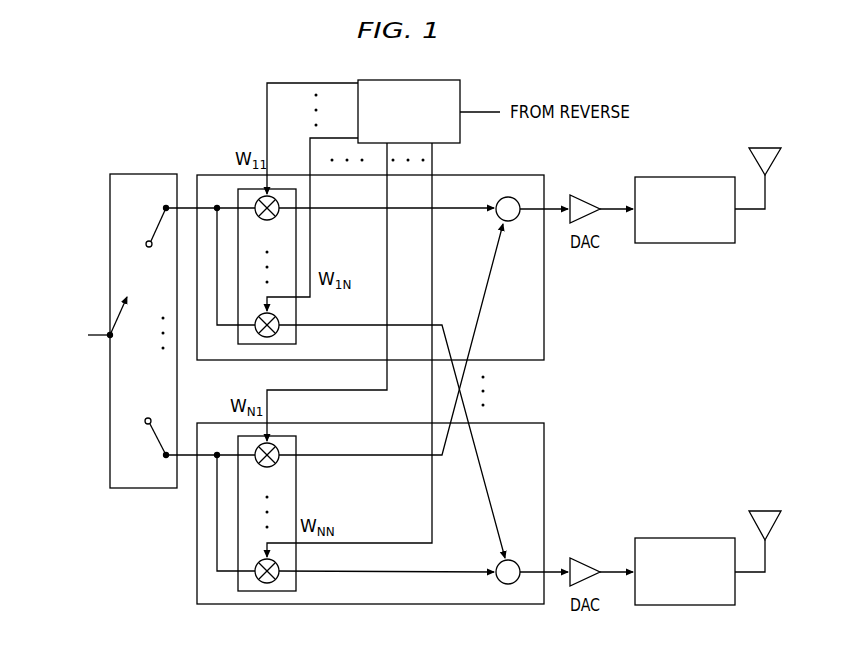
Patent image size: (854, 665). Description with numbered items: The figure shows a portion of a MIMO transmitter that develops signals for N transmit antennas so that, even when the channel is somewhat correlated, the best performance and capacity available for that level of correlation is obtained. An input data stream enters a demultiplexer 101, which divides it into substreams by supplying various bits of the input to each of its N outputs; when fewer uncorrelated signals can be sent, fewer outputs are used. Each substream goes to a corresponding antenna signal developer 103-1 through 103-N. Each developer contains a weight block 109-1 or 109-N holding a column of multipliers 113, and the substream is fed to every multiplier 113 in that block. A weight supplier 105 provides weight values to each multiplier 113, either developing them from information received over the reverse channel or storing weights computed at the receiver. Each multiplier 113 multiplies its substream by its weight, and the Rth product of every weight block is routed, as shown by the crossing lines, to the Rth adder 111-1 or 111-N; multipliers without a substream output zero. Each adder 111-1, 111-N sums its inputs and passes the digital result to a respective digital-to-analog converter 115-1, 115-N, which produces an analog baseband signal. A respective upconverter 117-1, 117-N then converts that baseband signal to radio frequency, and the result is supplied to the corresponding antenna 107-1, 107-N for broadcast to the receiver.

The demultiplexer 101 is at (117, 489).
The antenna signal developer 103-1 is at (500, 175).
The antenna signal developer 103-N is at (500, 423).
The weight supplier 105 is at (420, 79).
The antenna 107-1 is at (763, 147).
The antenna 107-N is at (763, 509).
The weight block 109-1 is at (297, 199).
The weight block 109-N is at (297, 445).
The adder 111-1 is at (500, 220).
The adder 111-N is at (498, 565).
The multiplier 113 is at (279, 214).
The digital-to-analog converter 115-1 is at (573, 195).
The digital-to-analog converter 115-N is at (573, 557).
The upconverter 117-1 is at (673, 176).
The upconverter 117-N is at (673, 537).